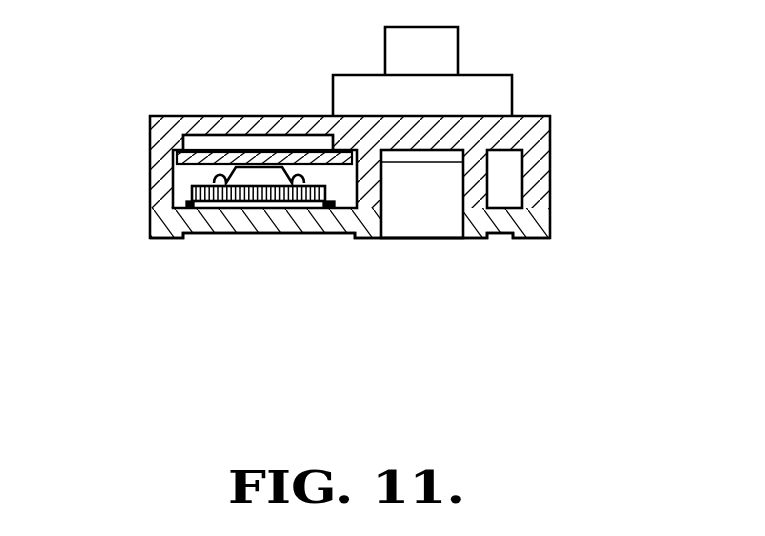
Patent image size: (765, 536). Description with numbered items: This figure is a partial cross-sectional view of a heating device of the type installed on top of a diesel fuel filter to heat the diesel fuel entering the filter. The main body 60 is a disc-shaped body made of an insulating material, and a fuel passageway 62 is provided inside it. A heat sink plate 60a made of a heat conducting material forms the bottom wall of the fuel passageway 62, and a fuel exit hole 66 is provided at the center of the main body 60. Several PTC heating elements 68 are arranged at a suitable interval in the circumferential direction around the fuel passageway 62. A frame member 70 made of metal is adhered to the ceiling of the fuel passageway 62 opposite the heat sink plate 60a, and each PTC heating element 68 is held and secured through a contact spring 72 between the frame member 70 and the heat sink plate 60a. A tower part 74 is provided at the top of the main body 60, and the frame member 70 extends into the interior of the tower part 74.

The main body 60 is at (550, 130).
The heat sink plate 60a is at (155, 215).
The fuel passageway 62 is at (187, 175).
The fuel exit hole 66 is at (383, 222).
The PTC heating element 68 is at (250, 196).
The frame member 70 is at (266, 167).
The contact spring 72 is at (266, 199).
The tower part 74 is at (455, 50).